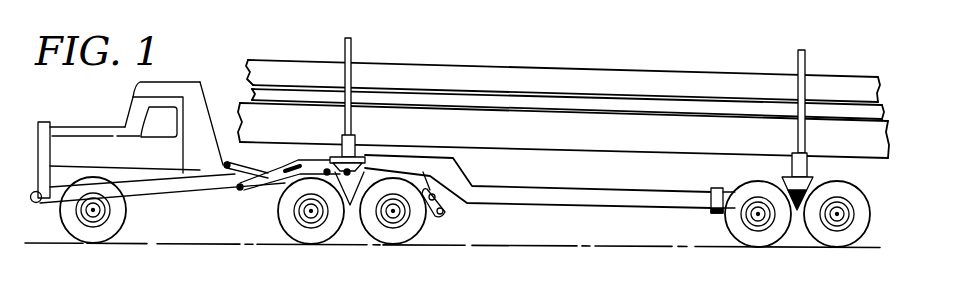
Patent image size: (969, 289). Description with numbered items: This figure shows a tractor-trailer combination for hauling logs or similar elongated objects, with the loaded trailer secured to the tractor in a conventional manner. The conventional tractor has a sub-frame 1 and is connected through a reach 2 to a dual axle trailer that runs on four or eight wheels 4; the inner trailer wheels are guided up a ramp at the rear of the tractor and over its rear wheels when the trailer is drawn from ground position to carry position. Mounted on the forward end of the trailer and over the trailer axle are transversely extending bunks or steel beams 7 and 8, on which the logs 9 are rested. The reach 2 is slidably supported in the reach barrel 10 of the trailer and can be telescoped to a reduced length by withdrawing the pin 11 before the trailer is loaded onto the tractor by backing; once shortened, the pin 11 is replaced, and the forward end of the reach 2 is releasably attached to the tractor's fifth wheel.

The sub-frame 1 is at (216, 186).
The reach 2 is at (570, 195).
The wheels 4 is at (766, 250).
The forward bunk 7 is at (333, 158).
The rear bunk 8 is at (808, 163).
The logs 9 is at (611, 127).
The reach barrel 10 is at (720, 197).
The pin 11 is at (722, 188).